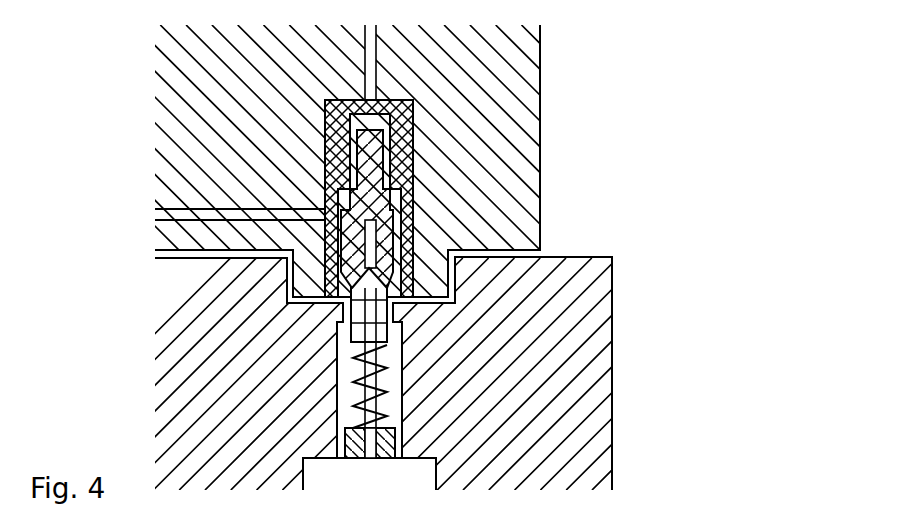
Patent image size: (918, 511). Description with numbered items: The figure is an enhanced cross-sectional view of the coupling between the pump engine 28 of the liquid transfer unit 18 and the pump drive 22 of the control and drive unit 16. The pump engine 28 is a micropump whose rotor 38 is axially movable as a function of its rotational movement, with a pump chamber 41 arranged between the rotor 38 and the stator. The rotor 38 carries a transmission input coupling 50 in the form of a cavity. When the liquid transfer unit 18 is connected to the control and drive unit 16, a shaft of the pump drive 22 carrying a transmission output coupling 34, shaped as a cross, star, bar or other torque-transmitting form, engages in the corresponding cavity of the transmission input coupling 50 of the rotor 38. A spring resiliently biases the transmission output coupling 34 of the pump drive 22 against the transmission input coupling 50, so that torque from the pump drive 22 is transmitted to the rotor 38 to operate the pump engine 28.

The control and drive unit 16 is at (619, 361).
The liquid transfer unit 18 is at (571, 46).
The pump drive 22 is at (440, 383).
The pump engine 28 is at (314, 158).
The transmission output coupling 34 is at (384, 270).
The rotor 38 is at (366, 167).
The pump chamber 41 is at (392, 192).
The transmission input coupling 50 is at (402, 258).